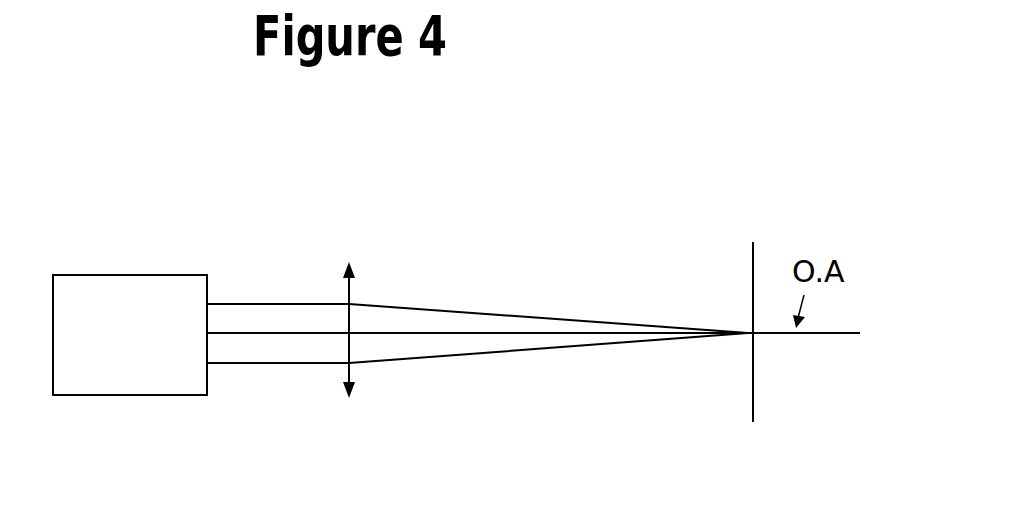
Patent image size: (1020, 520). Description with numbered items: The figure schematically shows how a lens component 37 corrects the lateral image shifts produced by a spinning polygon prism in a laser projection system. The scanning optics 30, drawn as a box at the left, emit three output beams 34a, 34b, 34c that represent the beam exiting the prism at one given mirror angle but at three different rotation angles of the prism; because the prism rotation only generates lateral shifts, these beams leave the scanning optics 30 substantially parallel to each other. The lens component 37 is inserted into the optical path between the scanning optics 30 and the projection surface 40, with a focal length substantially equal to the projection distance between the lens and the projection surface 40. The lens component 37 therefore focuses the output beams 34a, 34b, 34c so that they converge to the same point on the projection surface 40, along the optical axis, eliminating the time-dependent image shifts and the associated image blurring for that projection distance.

The scanning optics 30 is at (130, 335).
The output beam 34a is at (230, 292).
The output beam 34b is at (282, 329).
The output beam 34c is at (267, 376).
The lens component 37 is at (370, 286).
The projection surface 40 is at (769, 315).